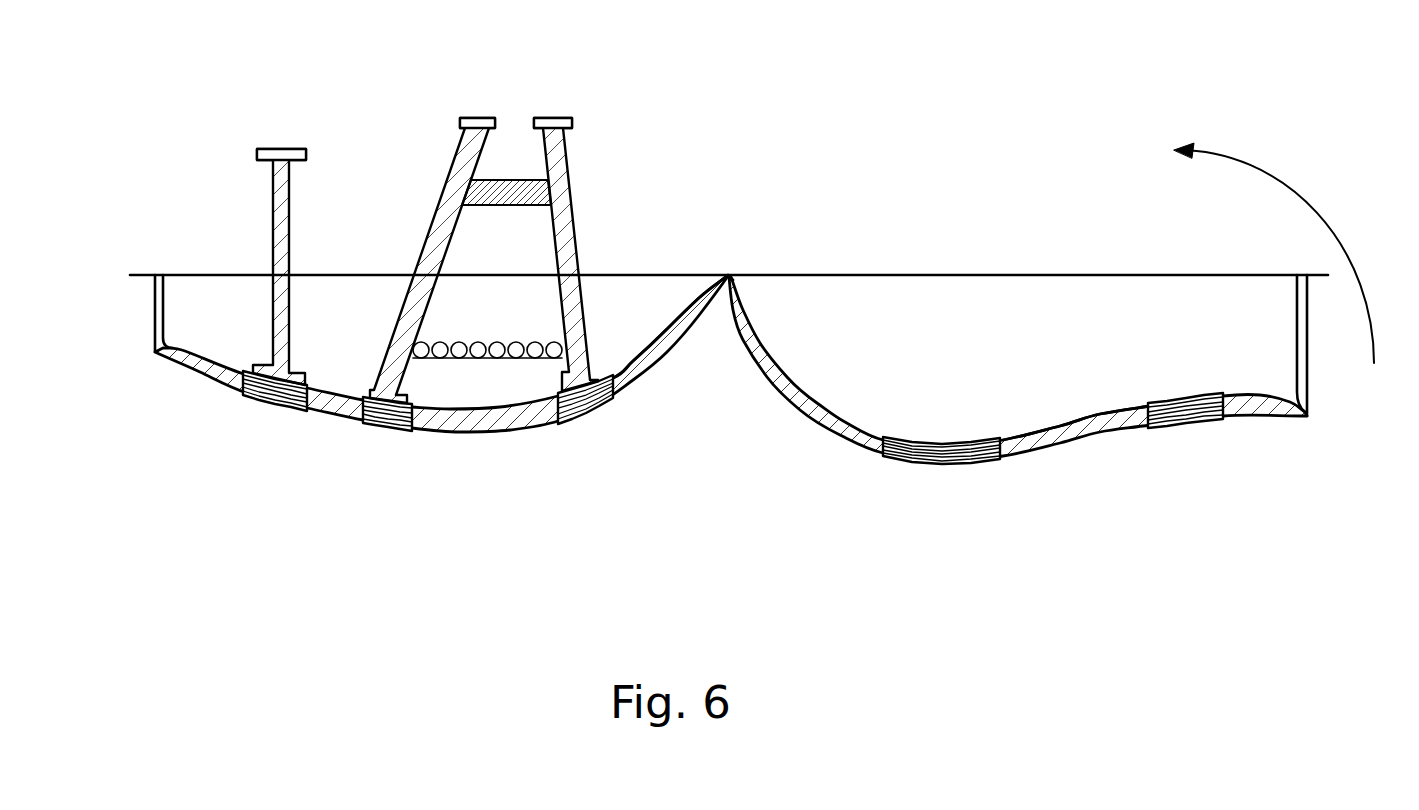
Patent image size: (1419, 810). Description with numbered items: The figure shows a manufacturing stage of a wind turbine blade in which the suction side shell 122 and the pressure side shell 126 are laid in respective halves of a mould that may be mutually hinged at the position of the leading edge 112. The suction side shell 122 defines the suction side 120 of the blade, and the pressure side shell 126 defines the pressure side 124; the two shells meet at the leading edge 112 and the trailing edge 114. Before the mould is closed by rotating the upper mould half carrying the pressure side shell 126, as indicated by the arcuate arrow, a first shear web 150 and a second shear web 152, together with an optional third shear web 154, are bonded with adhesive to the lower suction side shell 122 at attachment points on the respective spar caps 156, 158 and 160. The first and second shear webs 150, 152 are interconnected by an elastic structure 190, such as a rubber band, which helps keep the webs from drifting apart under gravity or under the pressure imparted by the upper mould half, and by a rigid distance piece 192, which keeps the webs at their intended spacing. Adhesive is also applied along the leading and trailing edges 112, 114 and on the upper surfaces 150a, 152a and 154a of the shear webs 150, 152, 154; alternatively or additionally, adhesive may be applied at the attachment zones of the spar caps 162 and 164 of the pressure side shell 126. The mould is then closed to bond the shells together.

The leading edge 112 is at (730, 274).
The trailing edge 114 is at (150, 283).
The suction side 120 is at (463, 438).
The suction side shell 122 is at (667, 356).
The pressure side 124 is at (805, 429).
The pressure side shell 126 is at (1075, 435).
The first shear web 150 is at (562, 293).
The upper surface of first shear web 150a is at (560, 118).
The second shear web 152 is at (407, 295).
The upper surface of second shear web 152a is at (478, 118).
The third shear web 154 is at (268, 285).
The upper surface of third shear web 154a is at (287, 148).
The spar cap 156 is at (587, 415).
The spar cap 158 is at (385, 420).
The spar cap 160 is at (263, 400).
The spar cap 162 is at (940, 463).
The spar cap 164 is at (1200, 420).
The elastic structure 190 is at (493, 360).
The rigid distance piece 192 is at (520, 185).